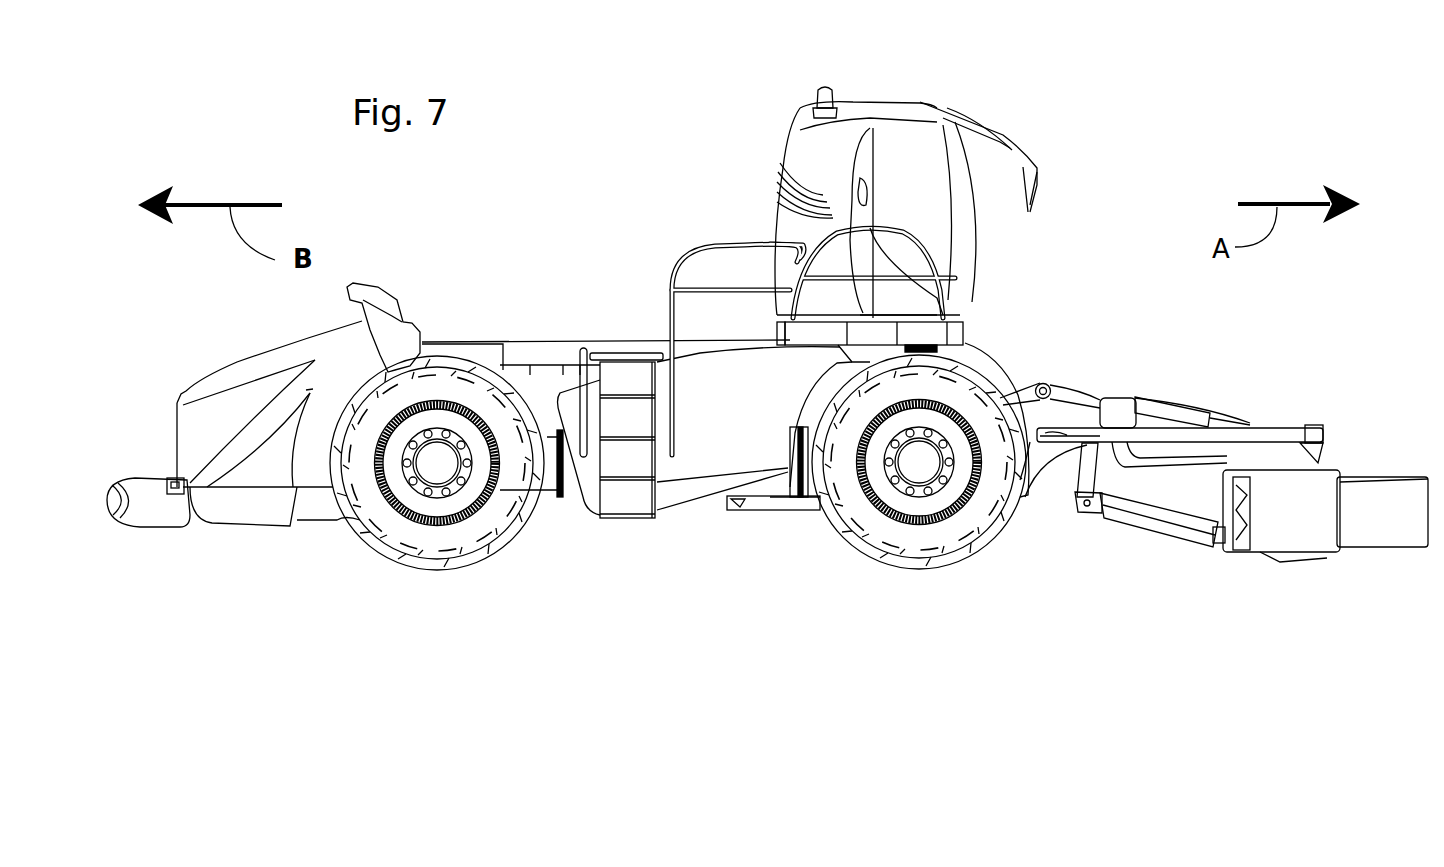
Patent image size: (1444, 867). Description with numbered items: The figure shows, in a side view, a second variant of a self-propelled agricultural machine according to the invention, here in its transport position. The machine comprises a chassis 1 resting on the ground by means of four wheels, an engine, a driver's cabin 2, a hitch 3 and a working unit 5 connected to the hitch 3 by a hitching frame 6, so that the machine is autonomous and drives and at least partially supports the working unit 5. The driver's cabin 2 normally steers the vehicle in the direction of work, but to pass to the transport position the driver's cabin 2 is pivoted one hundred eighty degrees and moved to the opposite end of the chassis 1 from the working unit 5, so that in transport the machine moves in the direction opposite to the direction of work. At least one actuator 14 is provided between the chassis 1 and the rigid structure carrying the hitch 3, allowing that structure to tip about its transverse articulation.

The chassis 1 is at (565, 490).
The driver's cabin 2 is at (914, 140).
The hitch 3 is at (1016, 364).
The hitching frame 6 is at (1067, 403).
The working unit 5 is at (1310, 492).
The actuator 14 is at (772, 538).